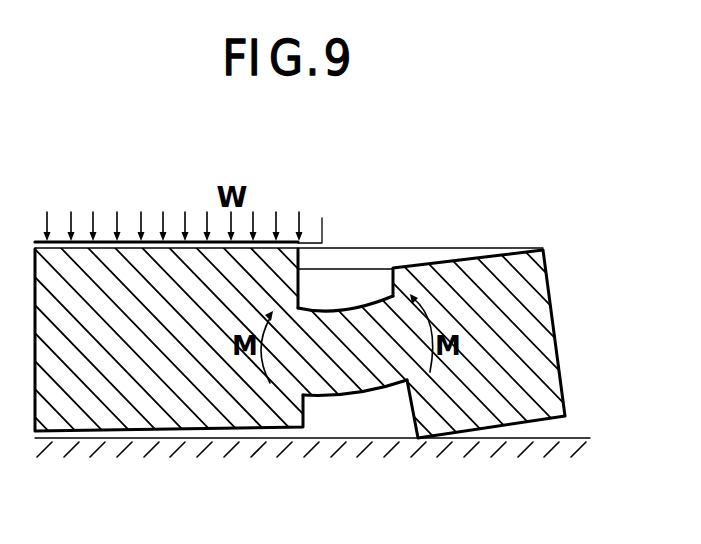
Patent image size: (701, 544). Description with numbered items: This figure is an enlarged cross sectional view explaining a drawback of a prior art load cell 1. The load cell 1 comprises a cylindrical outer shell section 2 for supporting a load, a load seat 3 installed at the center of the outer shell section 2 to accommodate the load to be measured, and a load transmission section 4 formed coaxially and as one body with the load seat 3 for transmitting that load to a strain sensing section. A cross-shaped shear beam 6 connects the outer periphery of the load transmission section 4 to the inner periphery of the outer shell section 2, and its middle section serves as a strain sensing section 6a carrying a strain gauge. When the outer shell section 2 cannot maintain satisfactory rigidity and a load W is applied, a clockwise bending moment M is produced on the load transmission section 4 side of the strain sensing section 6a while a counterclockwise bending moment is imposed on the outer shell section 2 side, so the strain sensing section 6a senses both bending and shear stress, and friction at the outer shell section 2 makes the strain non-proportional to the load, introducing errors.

The load cell 1 is at (82, 222).
The cylindrical outer shell section 2 is at (545, 355).
The load seat 3 is at (153, 241).
The load transmission section 4 is at (210, 388).
The shear beam 6 is at (355, 300).
The strain sensing section 6a is at (358, 360).